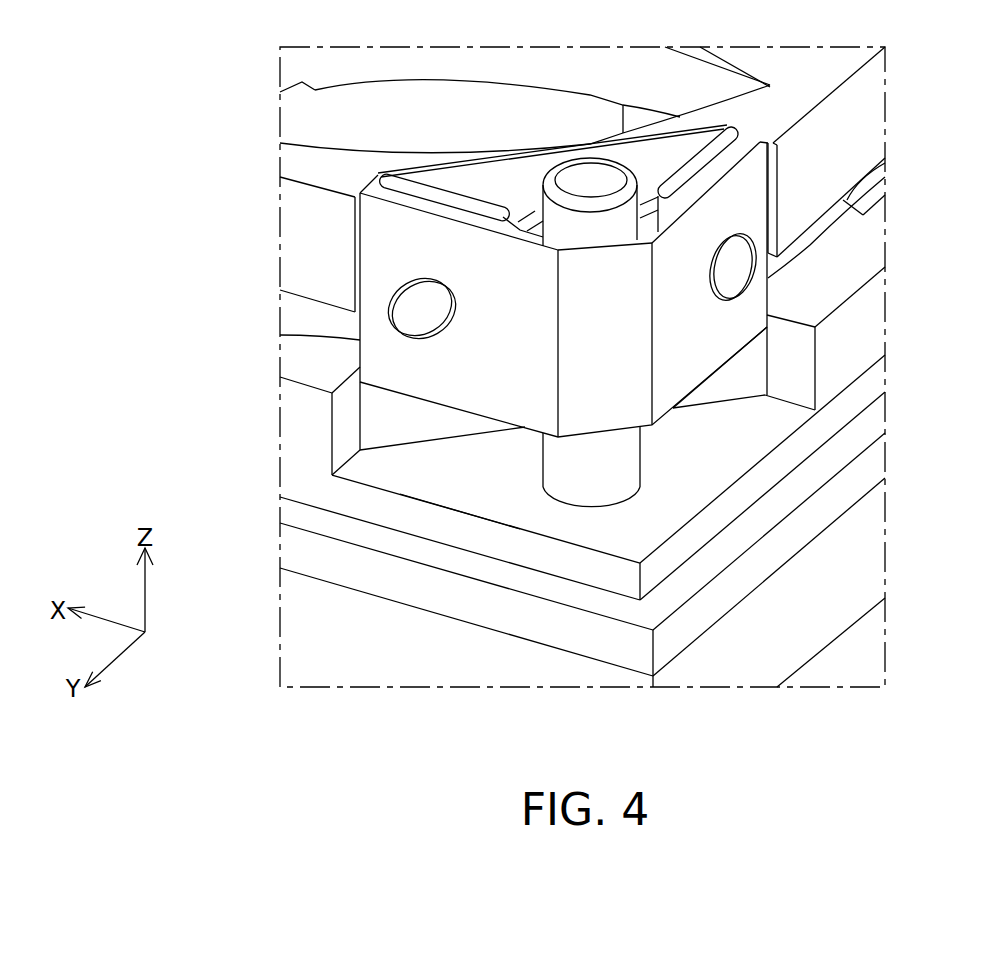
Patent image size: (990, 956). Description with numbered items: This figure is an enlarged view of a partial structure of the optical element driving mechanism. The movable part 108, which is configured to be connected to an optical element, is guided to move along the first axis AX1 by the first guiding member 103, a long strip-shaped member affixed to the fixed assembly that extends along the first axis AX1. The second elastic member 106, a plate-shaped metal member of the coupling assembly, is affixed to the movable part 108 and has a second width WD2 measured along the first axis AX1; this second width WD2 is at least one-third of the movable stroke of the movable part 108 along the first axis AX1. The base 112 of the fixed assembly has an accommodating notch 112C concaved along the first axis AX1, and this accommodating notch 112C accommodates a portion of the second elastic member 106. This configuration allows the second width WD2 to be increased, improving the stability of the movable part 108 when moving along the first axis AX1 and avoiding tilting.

The movable part 108 is at (777, 107).
The second elastic member 106 is at (617, 350).
The first guiding member 103 is at (577, 463).
The base 112 is at (868, 465).
The accommodating notch 112C is at (485, 492).
The second width WD2 is at (508, 240).
The first axis AX1 is at (213, 122).